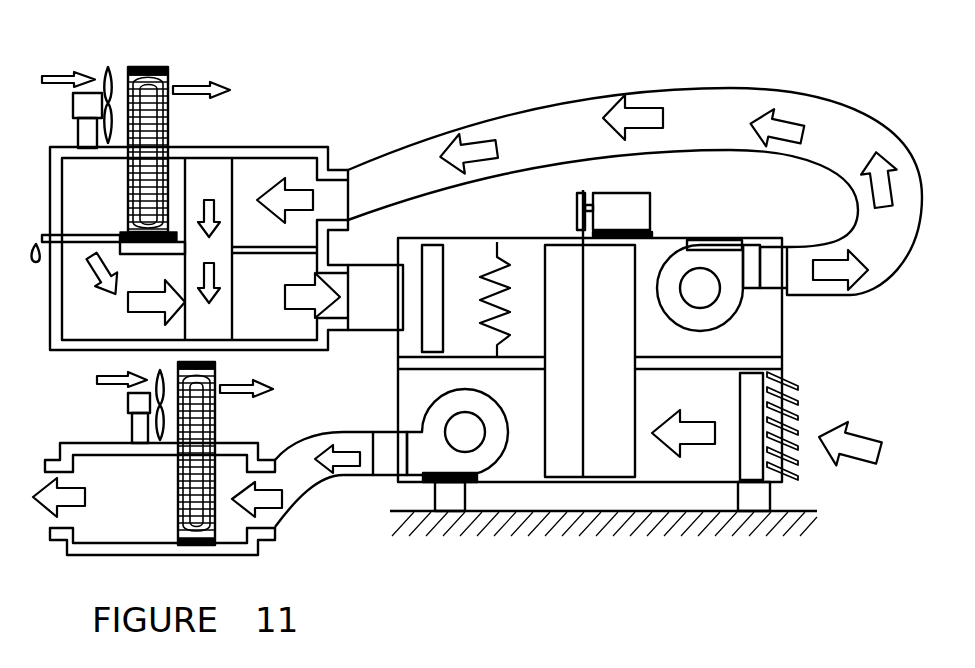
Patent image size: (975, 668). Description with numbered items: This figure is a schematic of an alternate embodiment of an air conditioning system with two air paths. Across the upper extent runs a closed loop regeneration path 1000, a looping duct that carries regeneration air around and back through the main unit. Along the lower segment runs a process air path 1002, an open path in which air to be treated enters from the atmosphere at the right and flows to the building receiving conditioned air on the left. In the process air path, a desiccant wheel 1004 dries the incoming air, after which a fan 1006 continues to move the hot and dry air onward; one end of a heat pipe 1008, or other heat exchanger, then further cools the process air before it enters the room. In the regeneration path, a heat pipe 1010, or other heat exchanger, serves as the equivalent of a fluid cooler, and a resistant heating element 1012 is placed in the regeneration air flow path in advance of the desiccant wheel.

The closed loop regeneration path 1000 is at (658, 87).
The process air path 1002 is at (300, 485).
The desiccant wheel 1004 is at (598, 465).
The fan 1006 is at (468, 457).
The heat pipe 1008 is at (200, 523).
The heat pipe 1010 is at (167, 157).
The resistant heating element 1012 is at (497, 255).